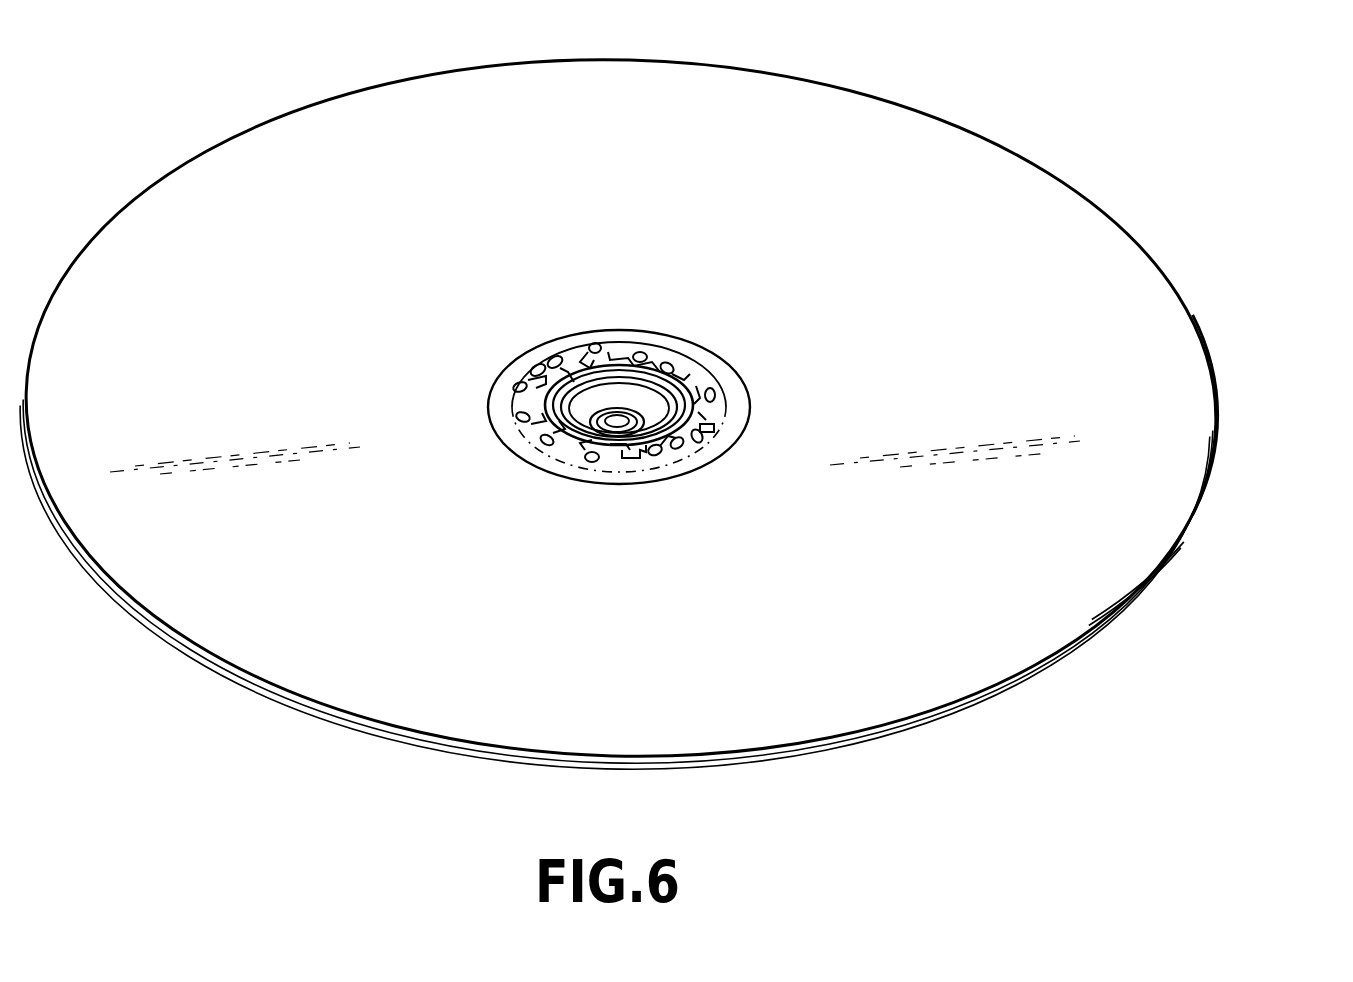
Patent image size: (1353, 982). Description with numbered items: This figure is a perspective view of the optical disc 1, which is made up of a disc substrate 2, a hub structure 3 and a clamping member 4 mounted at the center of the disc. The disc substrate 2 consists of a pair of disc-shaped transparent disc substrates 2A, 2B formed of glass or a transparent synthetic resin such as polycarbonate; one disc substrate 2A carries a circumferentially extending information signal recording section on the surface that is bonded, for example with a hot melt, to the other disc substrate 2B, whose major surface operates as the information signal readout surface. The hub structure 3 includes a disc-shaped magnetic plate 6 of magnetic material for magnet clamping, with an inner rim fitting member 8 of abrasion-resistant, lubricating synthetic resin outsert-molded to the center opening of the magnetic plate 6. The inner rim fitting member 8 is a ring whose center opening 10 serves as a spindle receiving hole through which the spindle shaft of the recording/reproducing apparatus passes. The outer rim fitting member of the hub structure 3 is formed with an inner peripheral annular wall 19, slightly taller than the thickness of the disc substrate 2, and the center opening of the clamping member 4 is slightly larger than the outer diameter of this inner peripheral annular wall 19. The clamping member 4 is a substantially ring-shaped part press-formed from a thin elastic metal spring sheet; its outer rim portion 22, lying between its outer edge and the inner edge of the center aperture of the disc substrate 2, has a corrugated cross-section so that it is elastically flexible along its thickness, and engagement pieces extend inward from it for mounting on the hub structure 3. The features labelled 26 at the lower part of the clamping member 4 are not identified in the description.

The optical disc 1 is at (1222, 188).
The disc substrate 2 is at (1304, 380).
The disc substrate 2A is at (1197, 507).
The disc substrate 2B is at (1200, 406).
The hub structure 3 is at (573, 373).
The clamping member 4 is at (730, 427).
The magnetic plate 6 is at (590, 395).
The inner rim fitting member 8 is at (660, 378).
The center opening 10 is at (638, 417).
The inner peripheral annular wall 19 is at (517, 384).
The outer rim portion 22 is at (527, 460).
The clip 26 is at (663, 460).